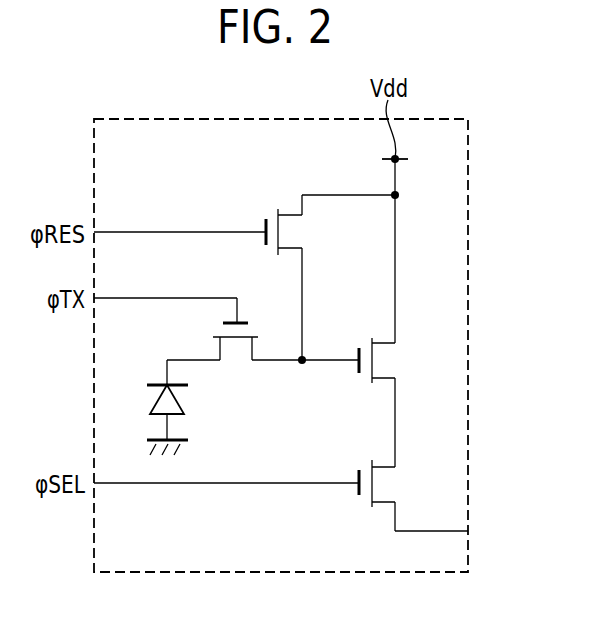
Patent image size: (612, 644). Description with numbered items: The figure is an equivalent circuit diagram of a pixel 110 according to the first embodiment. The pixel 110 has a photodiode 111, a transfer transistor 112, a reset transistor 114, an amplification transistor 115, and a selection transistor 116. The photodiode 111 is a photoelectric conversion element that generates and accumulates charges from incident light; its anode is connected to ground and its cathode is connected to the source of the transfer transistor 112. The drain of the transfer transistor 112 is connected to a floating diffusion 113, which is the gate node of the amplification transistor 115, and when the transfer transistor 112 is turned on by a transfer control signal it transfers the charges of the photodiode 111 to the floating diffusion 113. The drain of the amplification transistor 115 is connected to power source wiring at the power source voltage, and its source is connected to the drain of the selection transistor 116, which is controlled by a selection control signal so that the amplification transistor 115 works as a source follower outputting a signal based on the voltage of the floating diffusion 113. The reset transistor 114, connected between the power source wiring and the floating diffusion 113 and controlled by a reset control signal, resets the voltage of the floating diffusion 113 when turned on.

The pixel 110 is at (468, 147).
The photodiode 111 is at (150, 402).
The transfer transistor 112 is at (247, 322).
The floating diffusion 113 is at (300, 363).
The reset transistor 114 is at (264, 222).
The amplification transistor 115 is at (358, 374).
The selection transistor 116 is at (358, 496).